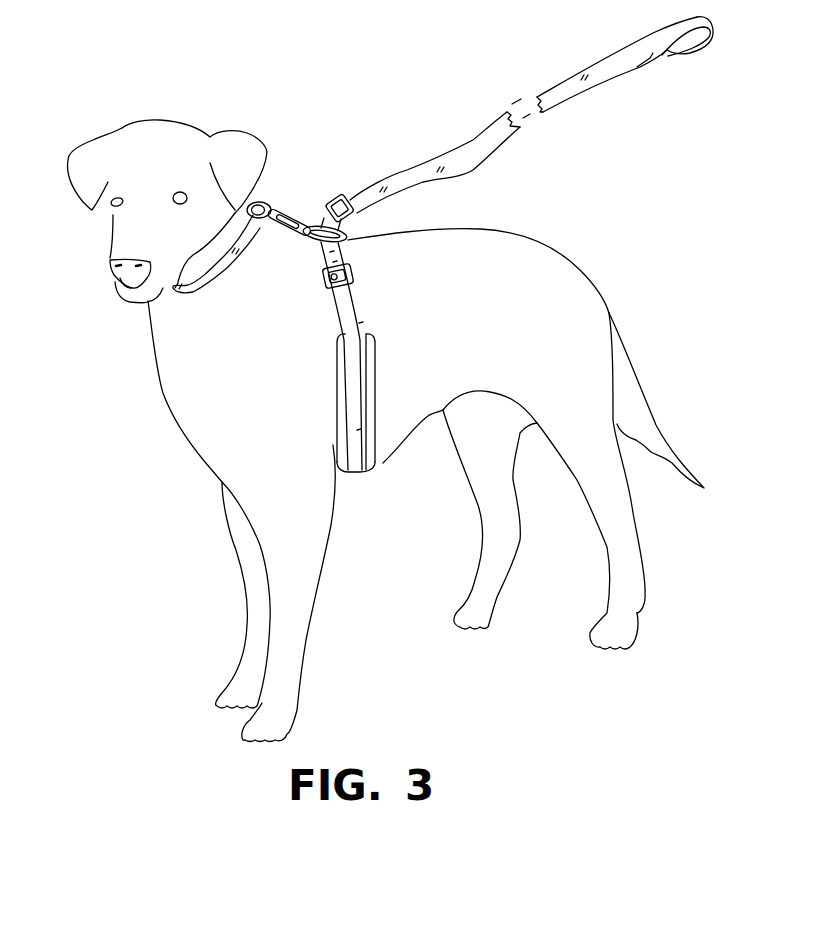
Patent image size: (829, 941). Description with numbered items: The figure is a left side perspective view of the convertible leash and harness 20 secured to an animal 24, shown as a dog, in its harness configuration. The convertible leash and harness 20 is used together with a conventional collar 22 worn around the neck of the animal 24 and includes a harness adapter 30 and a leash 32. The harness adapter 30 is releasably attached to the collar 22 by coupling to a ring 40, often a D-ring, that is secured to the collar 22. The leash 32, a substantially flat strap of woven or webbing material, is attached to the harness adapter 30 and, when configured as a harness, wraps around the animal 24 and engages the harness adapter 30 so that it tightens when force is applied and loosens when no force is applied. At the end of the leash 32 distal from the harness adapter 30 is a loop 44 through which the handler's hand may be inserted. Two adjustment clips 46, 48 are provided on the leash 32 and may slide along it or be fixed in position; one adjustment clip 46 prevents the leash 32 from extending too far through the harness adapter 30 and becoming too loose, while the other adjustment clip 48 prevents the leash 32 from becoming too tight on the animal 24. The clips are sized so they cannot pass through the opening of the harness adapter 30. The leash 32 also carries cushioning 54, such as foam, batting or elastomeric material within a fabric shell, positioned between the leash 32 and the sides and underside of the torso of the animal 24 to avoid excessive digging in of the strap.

The convertible leash and harness 20 is at (526, 243).
The collar 22 is at (193, 282).
The animal 24 is at (170, 379).
The harness adapter 30 is at (303, 207).
The leash 32 is at (502, 115).
The ring 40 is at (263, 202).
The loop 44 is at (692, 54).
The adjustment clip 46 is at (330, 195).
The adjustment clip 48 is at (327, 270).
The cushioning 54 is at (372, 380).